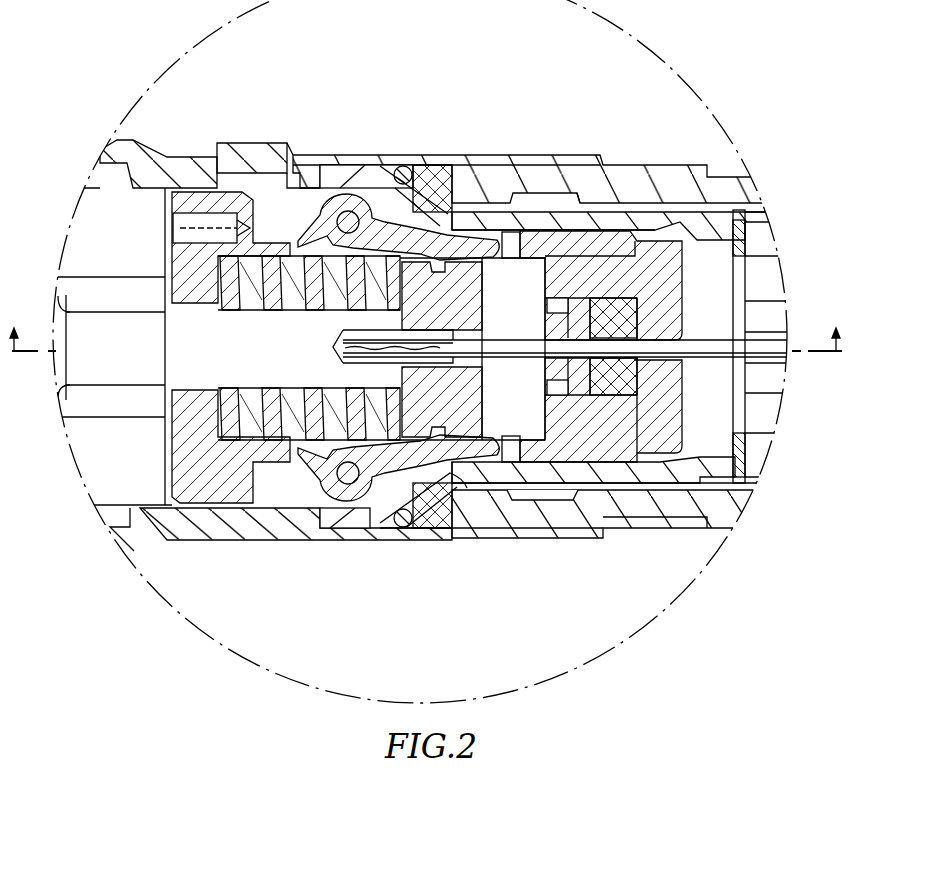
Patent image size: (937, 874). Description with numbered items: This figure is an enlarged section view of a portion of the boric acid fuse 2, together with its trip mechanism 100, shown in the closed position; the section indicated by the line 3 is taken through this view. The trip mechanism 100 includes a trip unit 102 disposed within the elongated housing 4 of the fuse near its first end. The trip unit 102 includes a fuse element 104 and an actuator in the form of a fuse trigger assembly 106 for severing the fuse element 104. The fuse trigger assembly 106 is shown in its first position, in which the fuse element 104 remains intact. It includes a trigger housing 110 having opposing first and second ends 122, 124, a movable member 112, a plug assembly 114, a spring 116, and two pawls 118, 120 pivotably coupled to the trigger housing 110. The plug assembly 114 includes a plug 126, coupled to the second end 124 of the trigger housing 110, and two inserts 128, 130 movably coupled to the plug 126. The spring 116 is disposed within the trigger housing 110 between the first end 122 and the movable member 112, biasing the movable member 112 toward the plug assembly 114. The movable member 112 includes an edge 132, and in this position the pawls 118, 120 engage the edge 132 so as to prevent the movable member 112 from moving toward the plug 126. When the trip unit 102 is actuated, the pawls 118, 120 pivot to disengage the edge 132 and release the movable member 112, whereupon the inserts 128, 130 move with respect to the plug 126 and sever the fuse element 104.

The fuse 2 is at (259, 624).
The section line 3- 3 is at (426, 365).
The elongated housing 4 is at (590, 237).
The trip mechanism 100 is at (348, 108).
The trip unit 102 is at (514, 205).
The fuse element 104 is at (525, 352).
The fuse trigger assembly 106 is at (326, 170).
The trigger housing 110 is at (577, 178).
The movable member 112 is at (243, 292).
The plug assembly 114 is at (612, 468).
The spring 116 is at (226, 404).
The pawl 118 is at (390, 228).
The pawl 120 is at (428, 465).
The first end of the trigger housing 122 is at (194, 178).
The second end of the trigger housing 124 is at (649, 216).
The plug 126 is at (668, 291).
The insert 128 is at (545, 322).
The insert 130 is at (622, 388).
The edge 132 is at (470, 323).